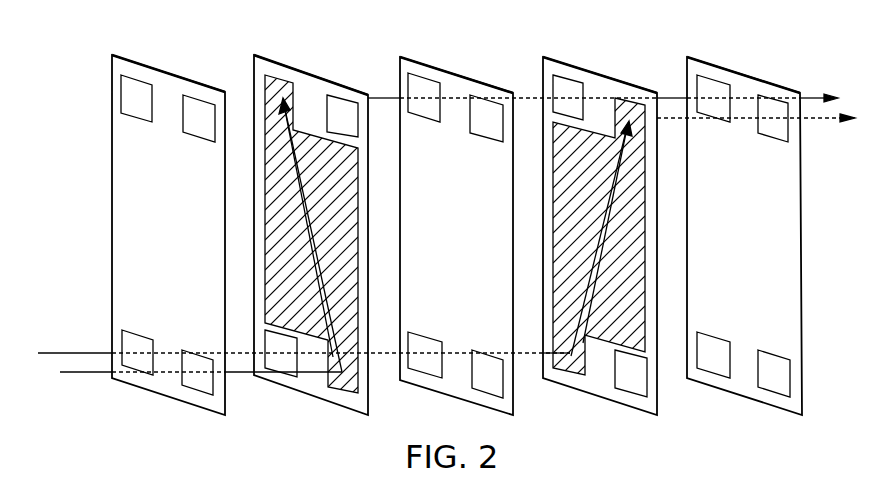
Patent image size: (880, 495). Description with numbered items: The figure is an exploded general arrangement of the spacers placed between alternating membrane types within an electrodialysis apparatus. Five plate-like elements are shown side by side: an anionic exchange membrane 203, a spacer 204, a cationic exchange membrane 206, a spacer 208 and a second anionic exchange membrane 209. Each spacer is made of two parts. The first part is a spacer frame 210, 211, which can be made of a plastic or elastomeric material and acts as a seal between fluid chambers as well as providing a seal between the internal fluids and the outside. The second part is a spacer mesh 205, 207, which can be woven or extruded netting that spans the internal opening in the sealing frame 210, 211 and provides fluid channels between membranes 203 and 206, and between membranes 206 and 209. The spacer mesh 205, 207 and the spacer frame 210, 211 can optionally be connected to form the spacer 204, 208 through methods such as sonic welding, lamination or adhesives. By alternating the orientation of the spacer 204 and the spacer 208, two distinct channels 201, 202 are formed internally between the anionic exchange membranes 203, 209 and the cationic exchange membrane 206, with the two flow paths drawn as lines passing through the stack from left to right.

The channel 201 is at (75, 352).
The channel 202 is at (88, 373).
The anionic exchange membrane 203 is at (172, 60).
The spacer 204 is at (304, 232).
The spacer mesh 205 is at (350, 392).
The cationic exchange membrane 206 is at (461, 67).
The spacer mesh 207 is at (557, 378).
The spacer 208 is at (590, 231).
The anionic exchange membrane 209 is at (749, 66).
The spacer frame 210 is at (310, 381).
The spacer frame 211 is at (600, 372).